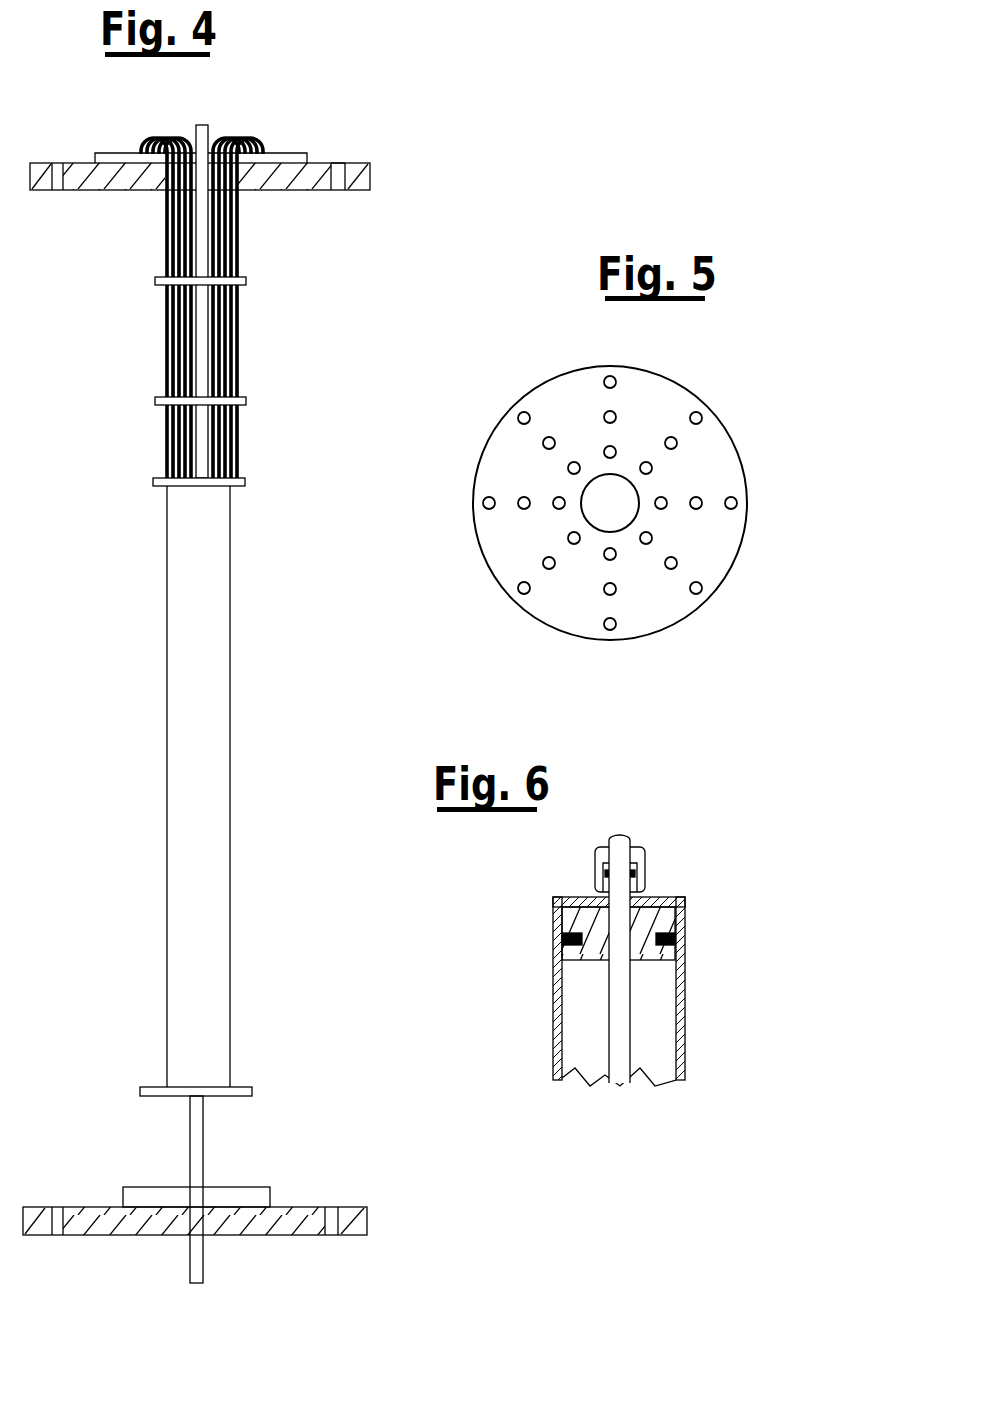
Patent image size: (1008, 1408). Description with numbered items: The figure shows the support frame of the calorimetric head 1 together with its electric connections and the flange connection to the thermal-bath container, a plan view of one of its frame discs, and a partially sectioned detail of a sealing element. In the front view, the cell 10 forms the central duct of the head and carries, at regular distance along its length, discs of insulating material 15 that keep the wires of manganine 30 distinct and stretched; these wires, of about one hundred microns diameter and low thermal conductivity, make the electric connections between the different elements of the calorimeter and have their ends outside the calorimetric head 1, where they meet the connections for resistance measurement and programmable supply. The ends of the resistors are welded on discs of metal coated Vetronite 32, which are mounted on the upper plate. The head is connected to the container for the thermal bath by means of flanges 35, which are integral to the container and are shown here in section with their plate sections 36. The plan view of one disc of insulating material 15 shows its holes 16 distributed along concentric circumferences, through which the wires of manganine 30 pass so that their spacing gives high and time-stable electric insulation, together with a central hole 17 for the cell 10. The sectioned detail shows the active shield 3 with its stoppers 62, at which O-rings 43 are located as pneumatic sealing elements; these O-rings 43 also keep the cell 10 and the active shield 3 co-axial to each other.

In FIG. 4, the calorimetric head 1 is at (138, 712).
In FIG. 6, the active shield 3 is at (720, 1037).
In FIG. 4, the cell 10 is at (195, 1167).
In FIG. 6, the cell 10 is at (620, 838).
In FIG. 4, the discs of insulating material 15 is at (246, 283).
In FIG. 5, the discs of insulating material 15 is at (741, 388).
In FIG. 5, the holes 16 is at (604, 381).
In FIG. 5, the central hole 17 is at (590, 510).
In FIG. 4, the wires of manganine 30 is at (250, 137).
In FIG. 4, the discs of metal coated Vetronite 32 is at (107, 155).
In FIG. 4, the flanges 35 is at (373, 182).
In FIG. 4, the plate section 36 is at (348, 167).
In FIG. 6, the O-rings 43 is at (634, 875).
In FIG. 6, the stoppers 62 is at (585, 918).